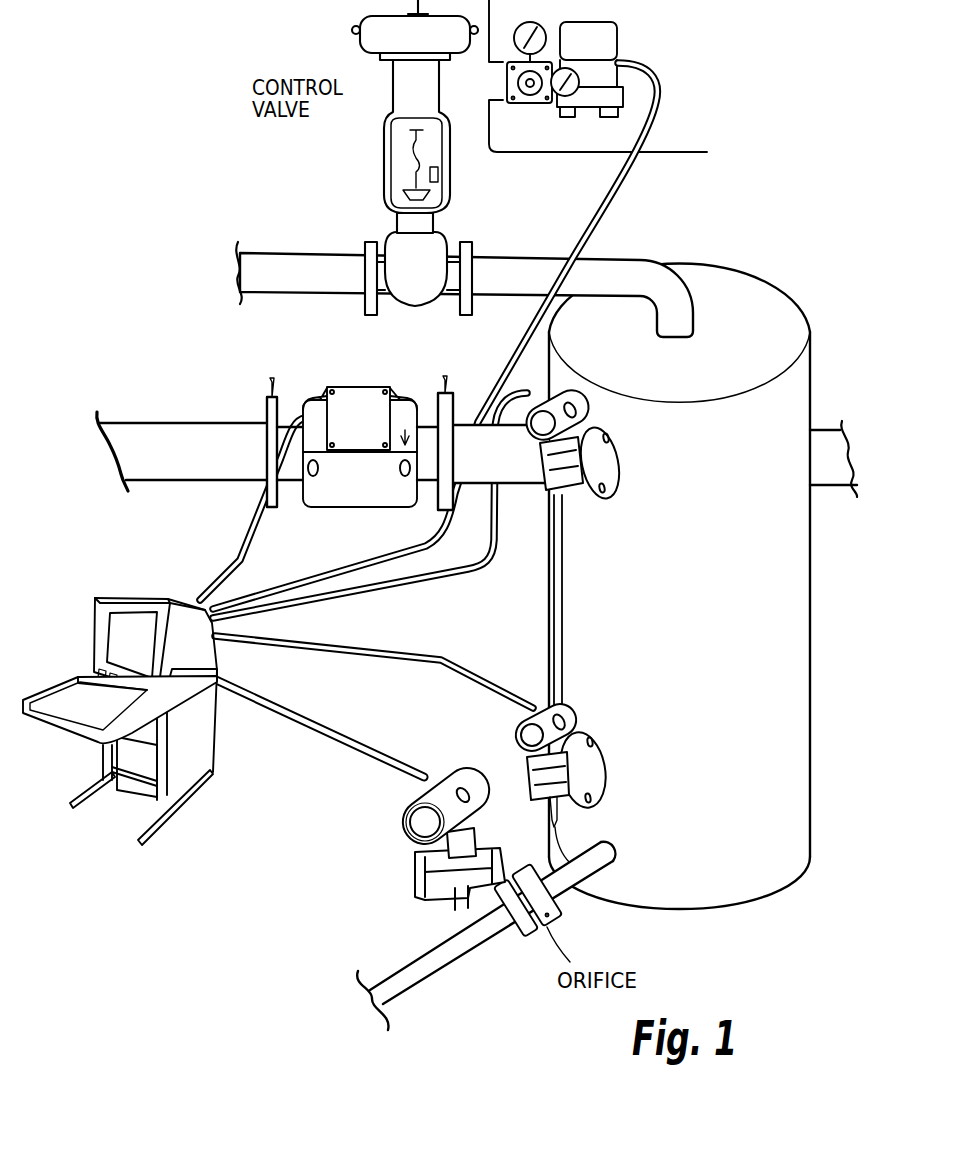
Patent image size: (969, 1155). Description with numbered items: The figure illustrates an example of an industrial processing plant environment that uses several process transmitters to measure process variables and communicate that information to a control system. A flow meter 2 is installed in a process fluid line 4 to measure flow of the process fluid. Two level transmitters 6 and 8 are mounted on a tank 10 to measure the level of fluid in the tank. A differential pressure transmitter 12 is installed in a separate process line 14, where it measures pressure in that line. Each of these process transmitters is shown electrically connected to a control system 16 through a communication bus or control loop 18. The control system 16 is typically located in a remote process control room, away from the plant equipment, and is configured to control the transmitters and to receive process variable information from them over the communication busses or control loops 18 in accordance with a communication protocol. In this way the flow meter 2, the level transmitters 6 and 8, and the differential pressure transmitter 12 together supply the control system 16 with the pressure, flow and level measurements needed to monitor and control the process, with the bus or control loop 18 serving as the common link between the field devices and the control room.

The flow meter 2 is at (370, 492).
The process fluid line 4 is at (204, 464).
The level transmitter 6 is at (593, 410).
The level transmitter 8 is at (577, 727).
The tank 10 is at (744, 372).
The differential pressure transmitter 12 is at (396, 800).
The process line 14 is at (432, 951).
The control system 16 is at (146, 580).
The communication bus or control loop 18 is at (226, 543).